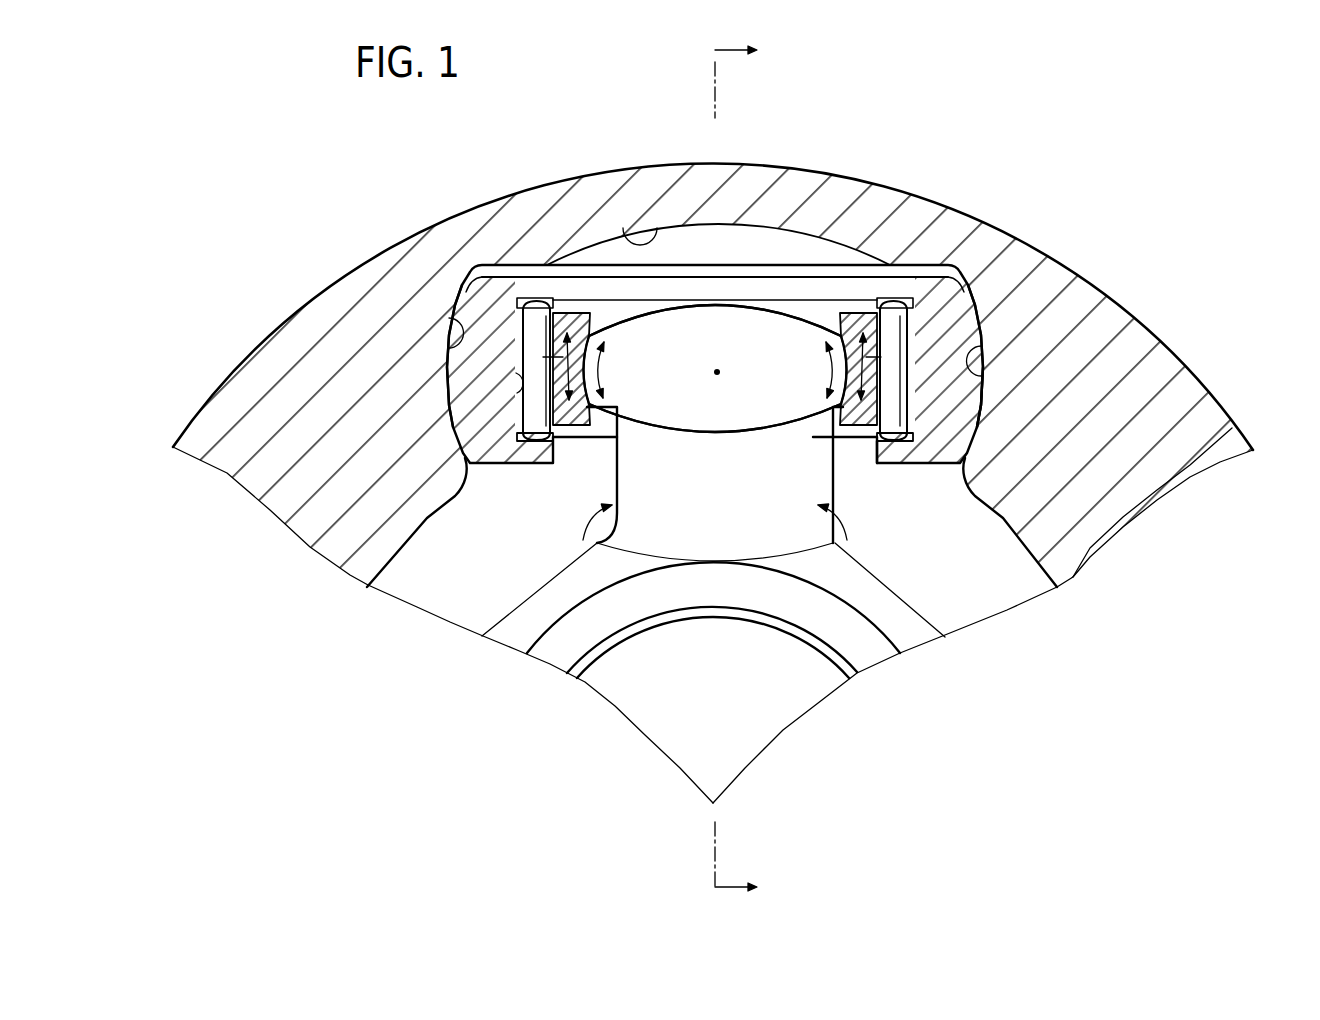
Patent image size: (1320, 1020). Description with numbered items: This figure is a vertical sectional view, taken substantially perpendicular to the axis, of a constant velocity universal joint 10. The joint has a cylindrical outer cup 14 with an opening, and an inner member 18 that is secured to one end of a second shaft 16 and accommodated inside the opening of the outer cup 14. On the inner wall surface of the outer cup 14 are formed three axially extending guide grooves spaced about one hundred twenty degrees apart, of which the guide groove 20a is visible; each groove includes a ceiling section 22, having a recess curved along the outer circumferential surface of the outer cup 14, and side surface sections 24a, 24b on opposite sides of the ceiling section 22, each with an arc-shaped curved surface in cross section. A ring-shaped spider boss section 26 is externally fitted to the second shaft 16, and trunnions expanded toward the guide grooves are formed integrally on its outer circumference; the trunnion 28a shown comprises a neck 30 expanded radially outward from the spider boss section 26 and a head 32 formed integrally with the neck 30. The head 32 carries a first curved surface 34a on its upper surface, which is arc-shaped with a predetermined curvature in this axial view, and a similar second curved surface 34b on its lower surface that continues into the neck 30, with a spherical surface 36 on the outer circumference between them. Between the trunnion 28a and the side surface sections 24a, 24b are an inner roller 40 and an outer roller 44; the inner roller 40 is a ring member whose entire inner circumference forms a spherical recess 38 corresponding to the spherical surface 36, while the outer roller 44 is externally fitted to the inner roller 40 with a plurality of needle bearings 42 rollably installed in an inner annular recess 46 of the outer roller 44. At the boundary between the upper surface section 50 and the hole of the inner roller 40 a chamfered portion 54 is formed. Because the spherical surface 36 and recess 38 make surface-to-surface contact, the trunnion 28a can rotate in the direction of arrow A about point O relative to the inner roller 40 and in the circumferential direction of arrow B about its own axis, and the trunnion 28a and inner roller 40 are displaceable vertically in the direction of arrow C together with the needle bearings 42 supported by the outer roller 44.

The constant velocity universal joint 10 is at (1069, 157).
The outer cup 14 is at (1020, 260).
The second shaft 16 is at (722, 693).
The inner member 18 is at (908, 628).
The guide groove 20a is at (727, 237).
The ceiling section 22 is at (657, 227).
The side surface section 24a is at (447, 352).
The side surface section 24b is at (982, 367).
The spider boss section 26 is at (888, 613).
The trunnion 28a is at (722, 345).
The neck 30 is at (770, 482).
The head 32 is at (627, 333).
The first curved surface 34a is at (717, 333).
The second curved surface 34b is at (720, 434).
The spherical surface 36 is at (718, 388).
The spherical recess 38 is at (852, 375).
The inner roller 40 is at (854, 335).
The needle bearings 42 is at (912, 327).
The outer roller 44 is at (940, 308).
The inner annular recess 46 is at (521, 400).
The upper surface section 50 is at (910, 441).
The chamfered portion 54 is at (580, 460).